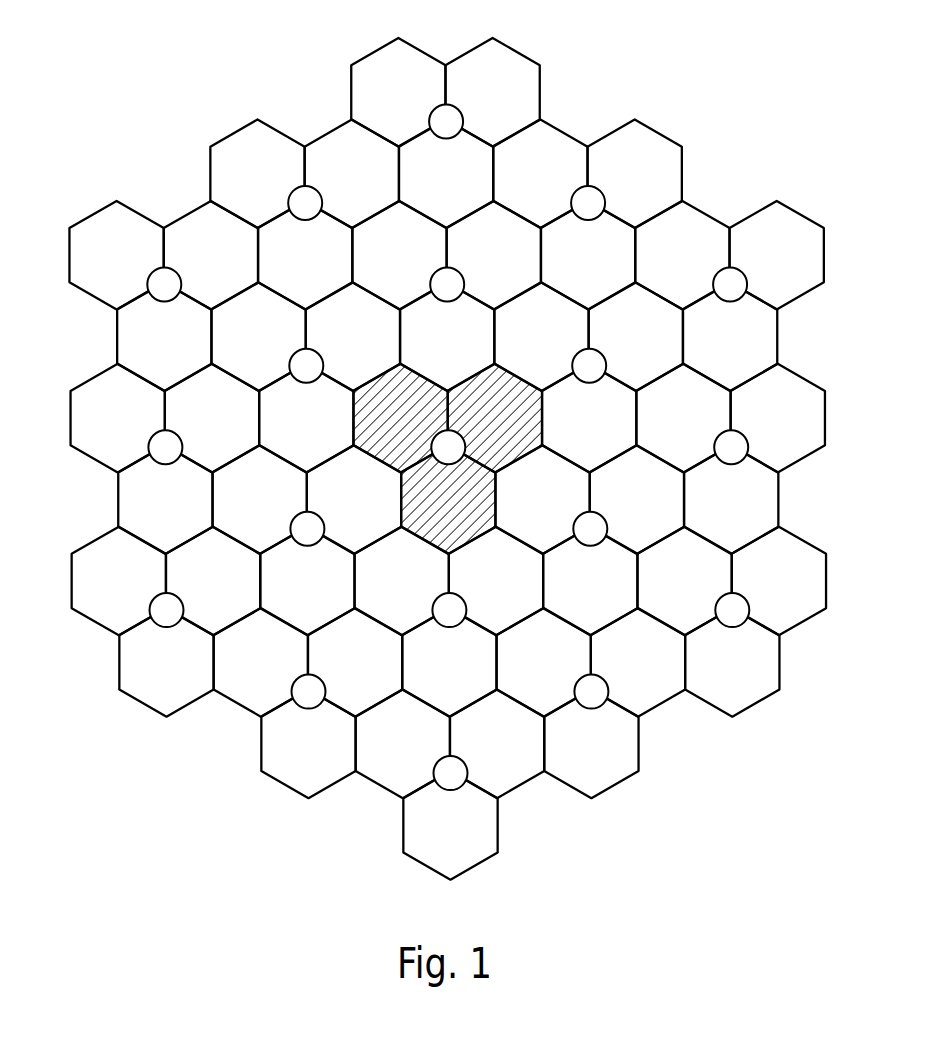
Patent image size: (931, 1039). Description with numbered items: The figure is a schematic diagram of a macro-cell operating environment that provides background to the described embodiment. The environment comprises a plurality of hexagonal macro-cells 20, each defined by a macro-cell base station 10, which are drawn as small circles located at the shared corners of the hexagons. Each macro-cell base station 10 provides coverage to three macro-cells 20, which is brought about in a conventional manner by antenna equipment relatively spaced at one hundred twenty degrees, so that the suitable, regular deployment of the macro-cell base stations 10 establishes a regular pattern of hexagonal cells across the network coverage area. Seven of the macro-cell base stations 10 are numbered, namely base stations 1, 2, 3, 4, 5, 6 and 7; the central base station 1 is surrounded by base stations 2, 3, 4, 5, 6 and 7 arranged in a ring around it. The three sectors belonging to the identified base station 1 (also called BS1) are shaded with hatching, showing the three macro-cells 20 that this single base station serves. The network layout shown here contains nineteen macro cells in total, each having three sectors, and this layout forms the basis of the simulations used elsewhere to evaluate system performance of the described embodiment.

The macro-cell base station 10 is at (149, 445).
The macro-cell 20 is at (398, 93).
The macro-cell base station 1 is at (448, 447).
The macro-cell base station 2 is at (589, 366).
The macro-cell base station 3 is at (447, 284).
The macro-cell base station 4 is at (306, 366).
The macro-cell base station 5 is at (307, 529).
The macro-cell base station 6 is at (449, 610).
The macro-cell base station 7 is at (590, 529).